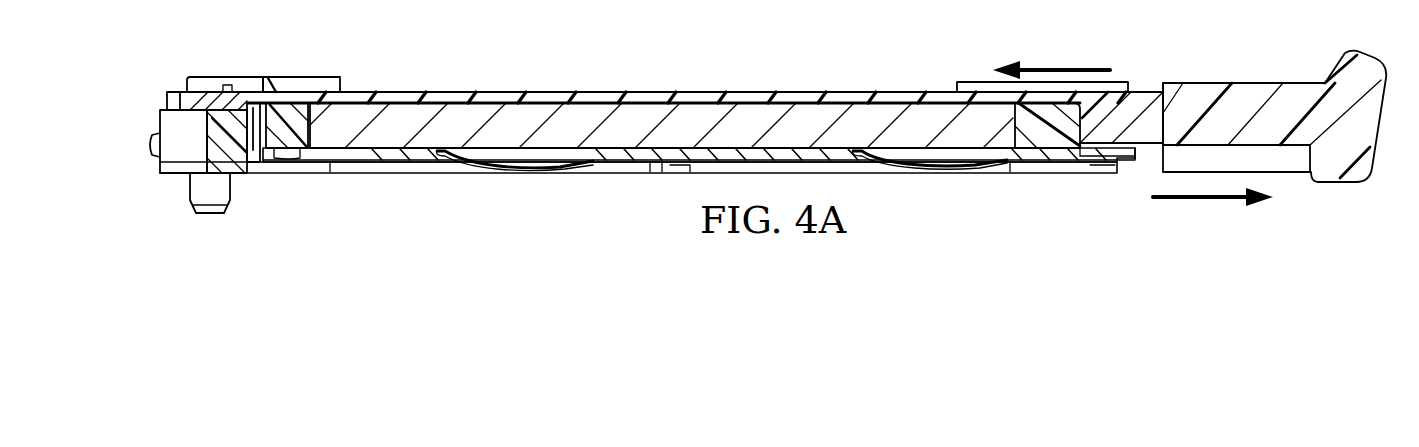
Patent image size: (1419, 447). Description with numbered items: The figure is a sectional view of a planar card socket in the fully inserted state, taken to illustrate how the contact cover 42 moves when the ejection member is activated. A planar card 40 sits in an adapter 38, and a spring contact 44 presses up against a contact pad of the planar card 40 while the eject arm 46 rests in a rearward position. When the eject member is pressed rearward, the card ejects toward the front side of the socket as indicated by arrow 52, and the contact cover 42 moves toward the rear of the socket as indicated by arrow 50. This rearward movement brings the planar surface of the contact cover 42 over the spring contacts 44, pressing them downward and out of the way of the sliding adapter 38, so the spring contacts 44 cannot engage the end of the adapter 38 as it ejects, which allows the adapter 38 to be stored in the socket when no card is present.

The adapter 38 is at (300, 141).
The planar card 40 is at (455, 120).
The contact cover 42 is at (667, 153).
The spring contact 44 is at (537, 175).
The eject arm 46 is at (168, 101).
The arrow 50 is at (1063, 66).
The arrow 52 is at (1200, 200).